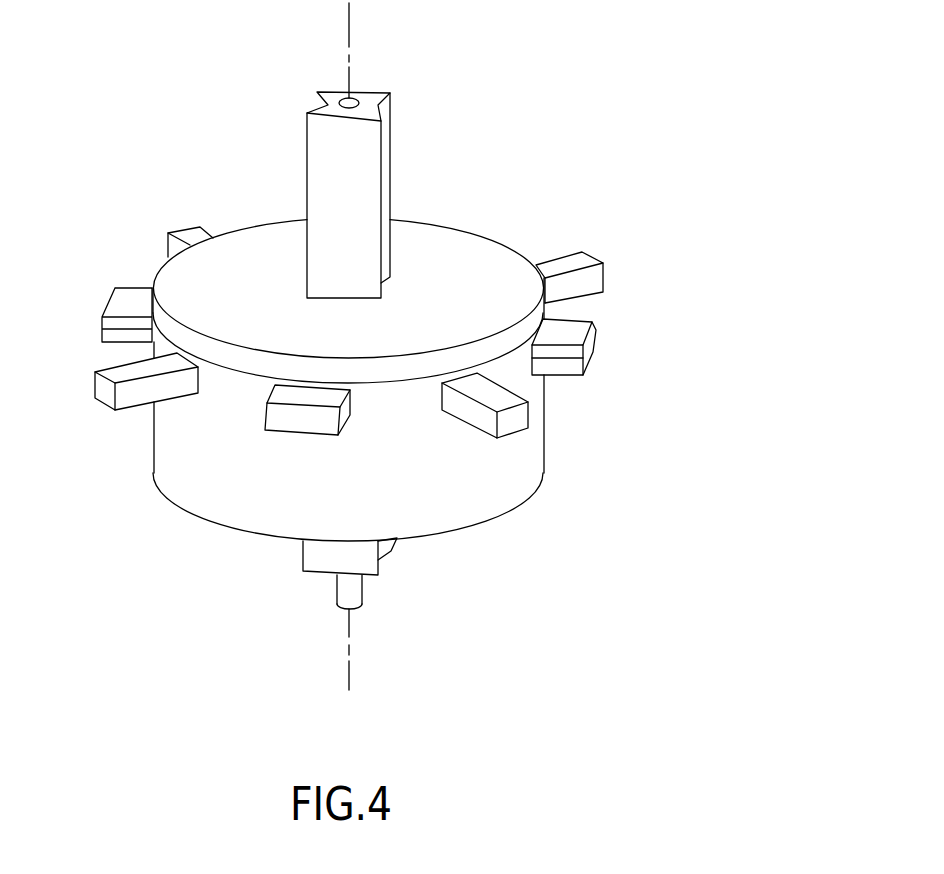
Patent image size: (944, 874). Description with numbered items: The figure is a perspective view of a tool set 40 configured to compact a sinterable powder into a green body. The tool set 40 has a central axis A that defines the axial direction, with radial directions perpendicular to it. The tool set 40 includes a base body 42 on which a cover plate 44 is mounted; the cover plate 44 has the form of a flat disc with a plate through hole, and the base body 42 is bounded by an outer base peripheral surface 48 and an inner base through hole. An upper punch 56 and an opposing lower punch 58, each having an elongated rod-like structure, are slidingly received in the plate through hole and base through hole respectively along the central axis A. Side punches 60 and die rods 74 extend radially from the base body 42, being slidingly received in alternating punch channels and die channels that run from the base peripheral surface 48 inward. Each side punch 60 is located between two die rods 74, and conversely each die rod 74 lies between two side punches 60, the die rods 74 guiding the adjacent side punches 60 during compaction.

The tool set 40 is at (524, 95).
The base body 42 is at (195, 457).
The cover plate 44 is at (457, 237).
The outer base peripheral surface 48 is at (198, 492).
The upper punch 56 is at (323, 159).
The lower punch 58 is at (318, 552).
The side punch 60 is at (577, 333).
The die rod 74 is at (567, 260).